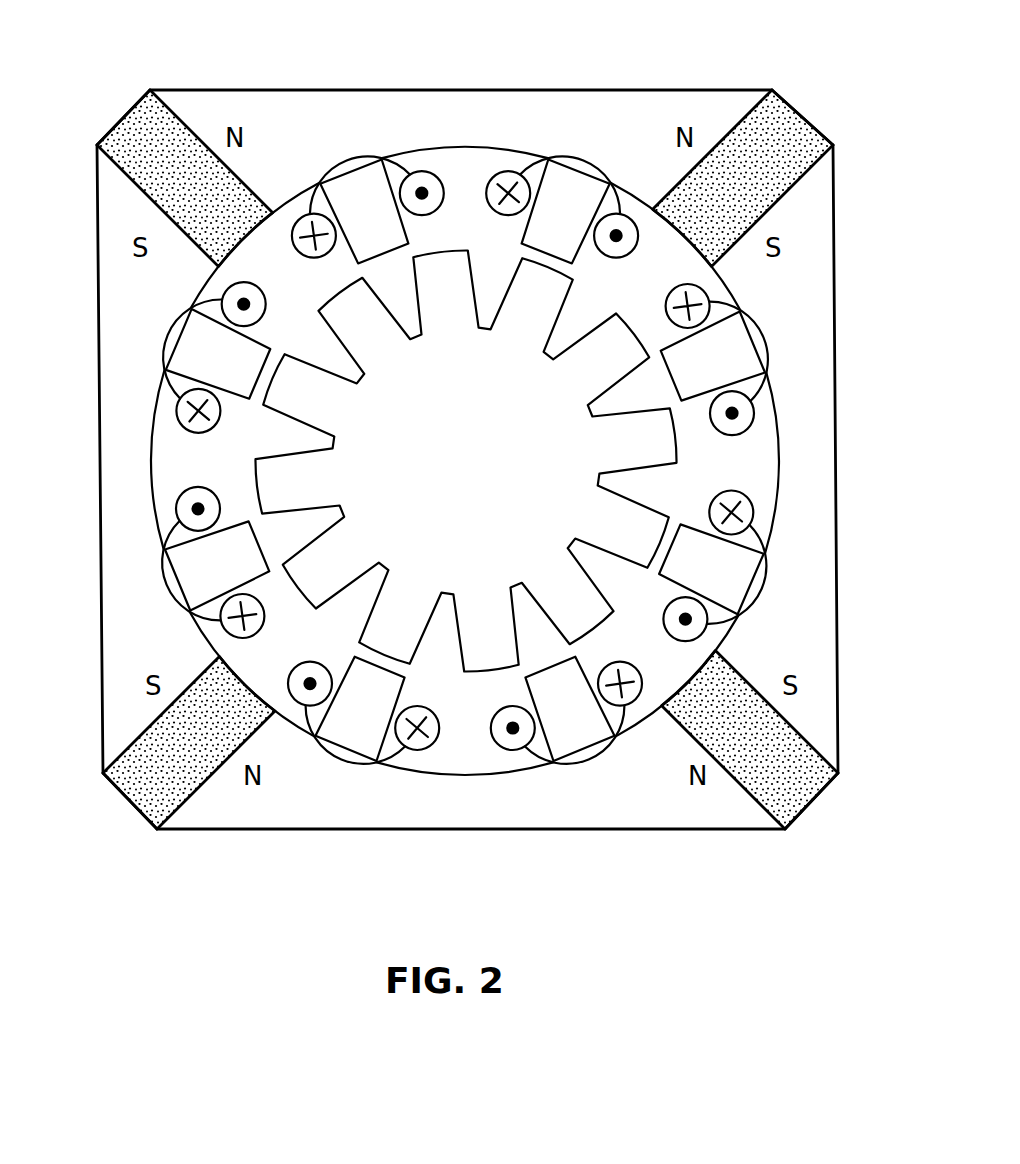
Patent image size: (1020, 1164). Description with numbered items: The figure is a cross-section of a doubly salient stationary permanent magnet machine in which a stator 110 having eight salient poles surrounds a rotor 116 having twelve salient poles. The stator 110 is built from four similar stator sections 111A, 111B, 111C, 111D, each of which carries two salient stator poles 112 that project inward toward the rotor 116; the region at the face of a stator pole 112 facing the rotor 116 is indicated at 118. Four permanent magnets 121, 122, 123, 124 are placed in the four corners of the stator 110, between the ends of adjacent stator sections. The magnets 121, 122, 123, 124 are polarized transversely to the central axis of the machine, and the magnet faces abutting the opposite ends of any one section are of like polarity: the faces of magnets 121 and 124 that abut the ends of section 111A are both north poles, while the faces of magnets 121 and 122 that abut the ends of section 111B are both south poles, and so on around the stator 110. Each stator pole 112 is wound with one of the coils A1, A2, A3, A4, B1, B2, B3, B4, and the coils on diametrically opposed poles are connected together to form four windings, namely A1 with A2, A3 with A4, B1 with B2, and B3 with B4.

The stator 110 is at (372, 74).
The stator section 111A is at (486, 831).
The stator section 111B is at (104, 348).
The stator section 111C is at (524, 102).
The stator section 111D is at (810, 402).
The salient stator pole 112 is at (721, 351).
The rotor 116 is at (486, 428).
The pole face / air gap 118 is at (663, 522).
The permanent magnet 121 is at (182, 800).
The permanent magnet 122 is at (166, 91).
The permanent magnet 123 is at (812, 168).
The permanent magnet 124 is at (807, 745).
The coil A1 is at (347, 157).
The coil A2 is at (606, 748).
The coil A3 is at (783, 327).
The coil A4 is at (160, 583).
The coil B1 is at (160, 327).
The coil B2 is at (774, 548).
The coil B3 is at (560, 158).
The coil B4 is at (313, 742).